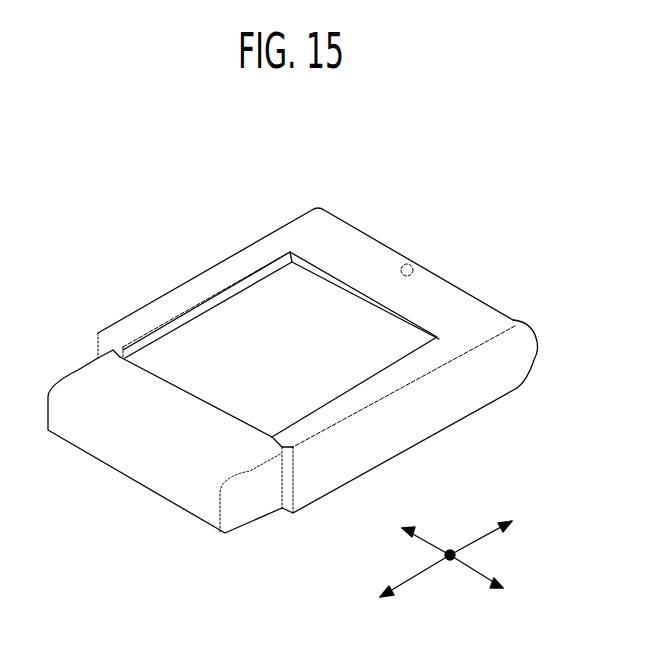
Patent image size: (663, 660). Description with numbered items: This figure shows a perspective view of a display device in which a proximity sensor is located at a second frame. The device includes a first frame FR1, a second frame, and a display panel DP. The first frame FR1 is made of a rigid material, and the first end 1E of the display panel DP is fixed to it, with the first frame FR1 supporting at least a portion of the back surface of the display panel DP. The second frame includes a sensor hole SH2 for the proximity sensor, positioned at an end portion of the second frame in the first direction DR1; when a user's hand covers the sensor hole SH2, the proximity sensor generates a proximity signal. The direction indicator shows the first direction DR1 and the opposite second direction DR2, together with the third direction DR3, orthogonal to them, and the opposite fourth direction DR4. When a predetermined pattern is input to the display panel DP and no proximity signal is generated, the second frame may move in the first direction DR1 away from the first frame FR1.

The first frame FR1 is at (73, 372).
The display panel DP is at (223, 310).
The sensor hole SH2 is at (406, 264).
The first end 1E is at (232, 418).
The first direction DR1 is at (498, 529).
The second direction DR2 is at (394, 589).
The third direction DR3 is at (496, 584).
The fourth direction DR4 is at (408, 534).